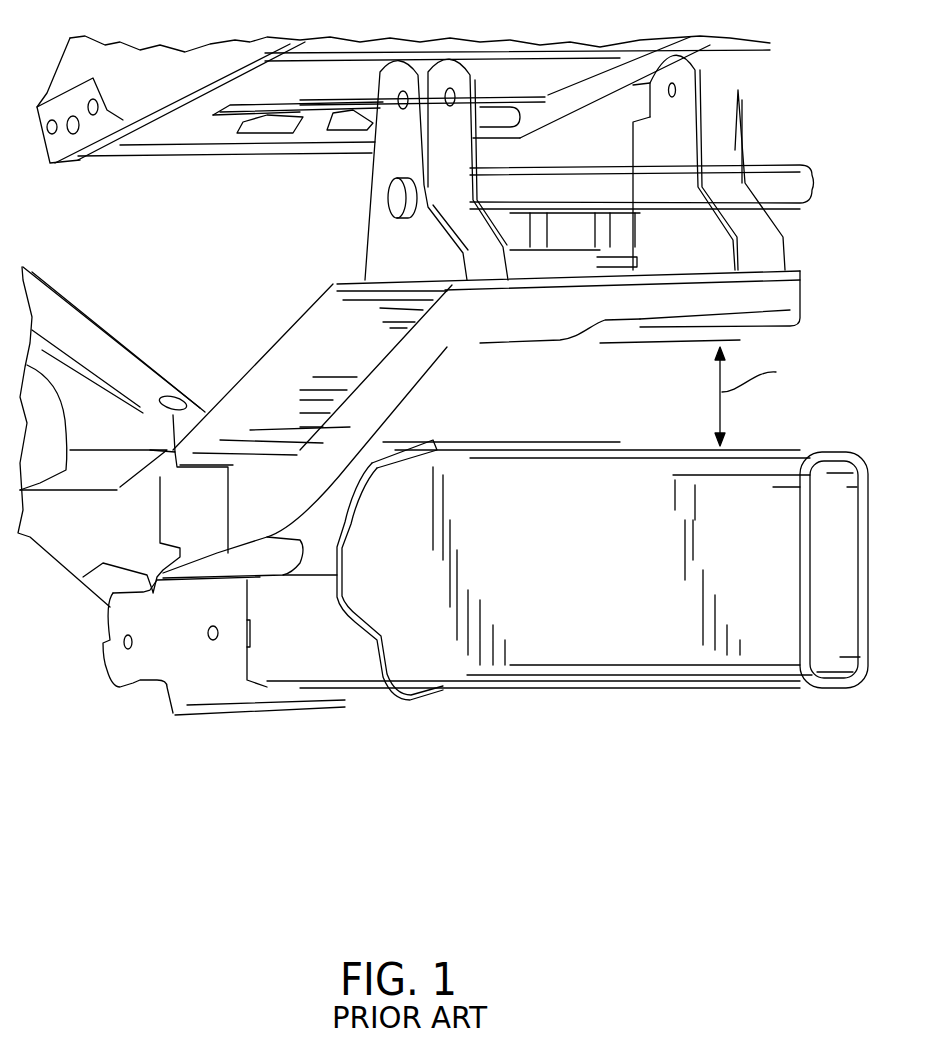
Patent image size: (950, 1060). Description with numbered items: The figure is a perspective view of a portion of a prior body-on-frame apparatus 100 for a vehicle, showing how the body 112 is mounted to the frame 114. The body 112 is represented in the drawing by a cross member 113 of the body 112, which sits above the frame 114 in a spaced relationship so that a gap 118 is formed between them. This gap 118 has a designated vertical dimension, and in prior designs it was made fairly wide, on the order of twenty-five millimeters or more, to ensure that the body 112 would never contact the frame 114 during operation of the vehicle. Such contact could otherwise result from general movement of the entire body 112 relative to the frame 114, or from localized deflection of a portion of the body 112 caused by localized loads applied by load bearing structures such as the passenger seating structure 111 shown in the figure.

The body-on-frame apparatus 100 is at (790, 127).
The passenger seating structure 111 is at (380, 232).
The body 112 is at (335, 290).
The cross member 113 is at (313, 367).
The frame 114 is at (632, 648).
The gap 118 is at (497, 383).